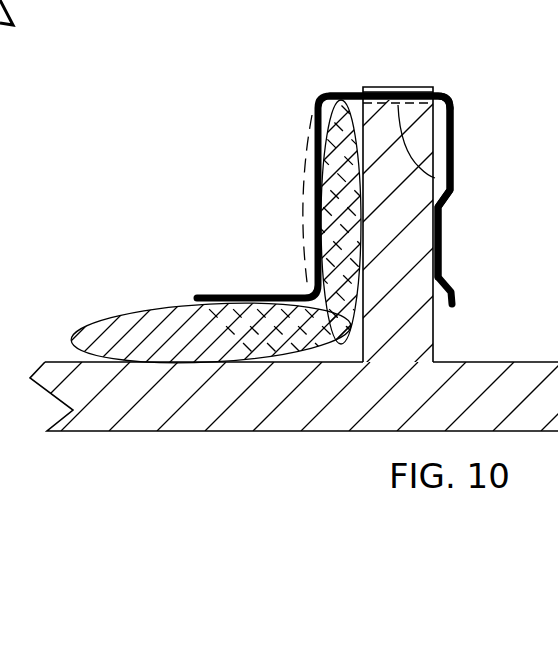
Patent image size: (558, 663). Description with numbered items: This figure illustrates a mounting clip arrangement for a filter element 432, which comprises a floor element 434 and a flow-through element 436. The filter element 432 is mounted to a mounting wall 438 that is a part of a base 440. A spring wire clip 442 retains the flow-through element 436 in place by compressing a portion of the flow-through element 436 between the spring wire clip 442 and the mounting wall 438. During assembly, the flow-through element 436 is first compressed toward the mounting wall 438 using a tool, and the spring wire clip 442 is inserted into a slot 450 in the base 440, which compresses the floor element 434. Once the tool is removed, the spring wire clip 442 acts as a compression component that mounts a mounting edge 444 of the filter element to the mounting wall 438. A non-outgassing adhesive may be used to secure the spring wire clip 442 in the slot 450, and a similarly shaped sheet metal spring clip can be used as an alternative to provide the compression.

The filter element 432 is at (157, 184).
The floor element 434 is at (159, 304).
The flow-through element 436 is at (302, 203).
The mounting wall 438 is at (435, 144).
The base 440 is at (150, 433).
The spring wire clip 442 is at (450, 93).
The mounting edge 444 is at (305, 108).
The slot 450 is at (445, 180).